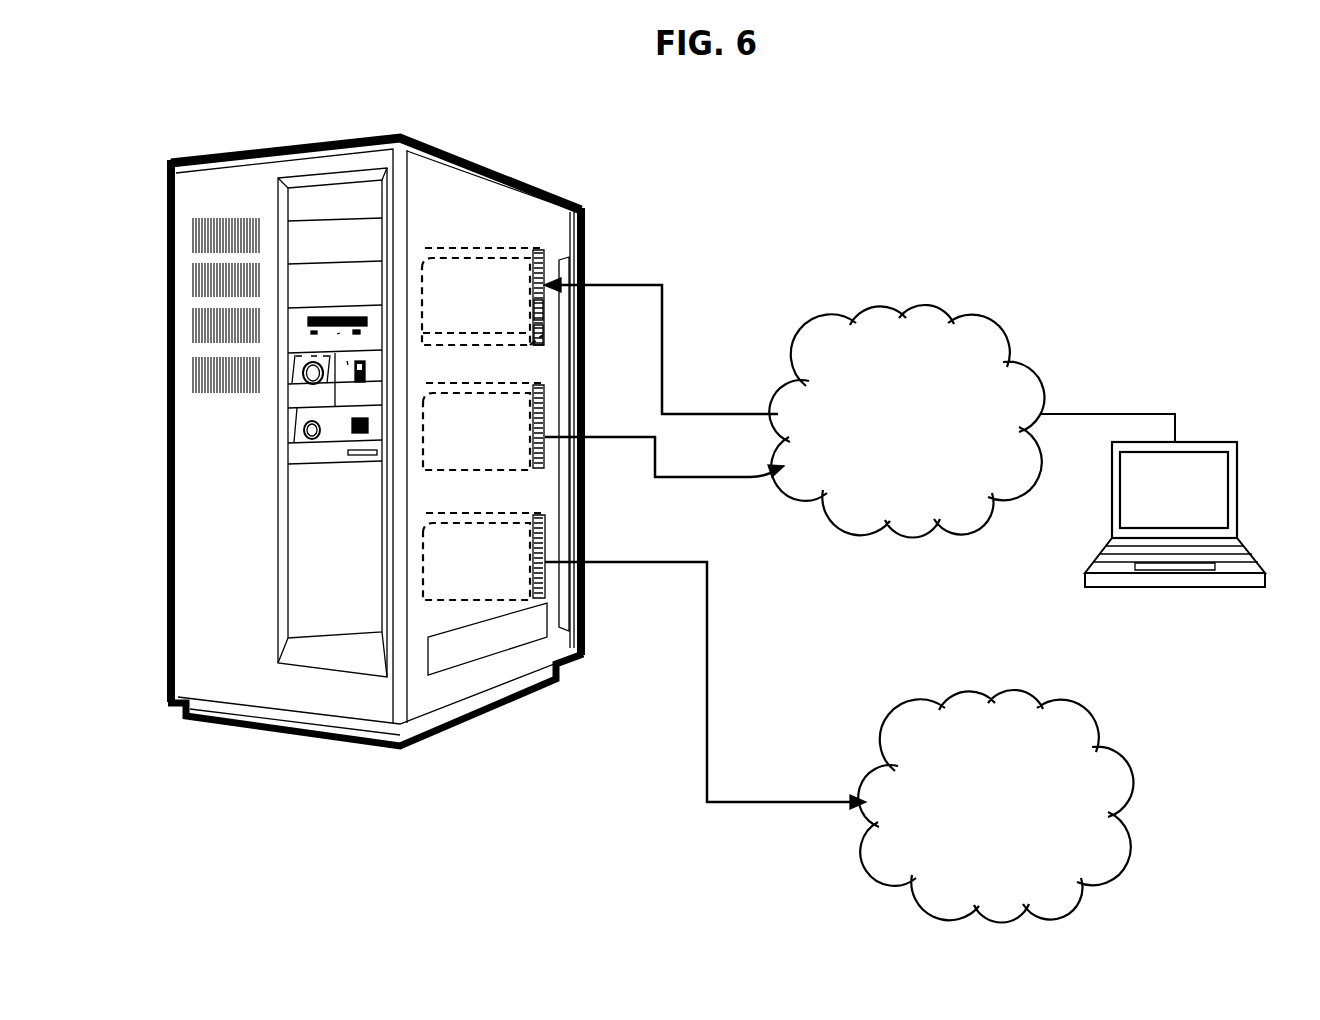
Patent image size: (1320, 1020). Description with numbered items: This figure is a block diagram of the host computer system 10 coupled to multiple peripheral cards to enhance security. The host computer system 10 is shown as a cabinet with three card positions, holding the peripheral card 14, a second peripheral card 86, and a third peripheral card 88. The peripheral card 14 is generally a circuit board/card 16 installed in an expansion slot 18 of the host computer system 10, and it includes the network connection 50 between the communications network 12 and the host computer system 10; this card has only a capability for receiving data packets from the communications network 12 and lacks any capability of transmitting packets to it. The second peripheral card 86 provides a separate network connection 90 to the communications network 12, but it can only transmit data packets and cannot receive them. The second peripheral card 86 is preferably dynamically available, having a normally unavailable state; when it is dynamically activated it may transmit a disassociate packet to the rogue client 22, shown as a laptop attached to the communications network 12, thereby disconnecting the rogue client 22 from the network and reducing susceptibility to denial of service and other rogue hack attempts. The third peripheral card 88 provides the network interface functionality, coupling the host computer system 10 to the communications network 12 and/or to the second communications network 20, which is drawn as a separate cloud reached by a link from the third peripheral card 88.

The host computer system 10 is at (240, 733).
The communications network 12 is at (962, 308).
The peripheral card 14 is at (563, 257).
The circuit board/card 16 is at (518, 309).
The expansion slot 18 is at (525, 347).
The second communications network 20 is at (1073, 878).
The rogue client 22 is at (1210, 443).
The network connection 50 is at (712, 313).
The second peripheral card 86 is at (548, 402).
The third peripheral card 88 is at (548, 537).
The separate network connection 90 is at (742, 481).